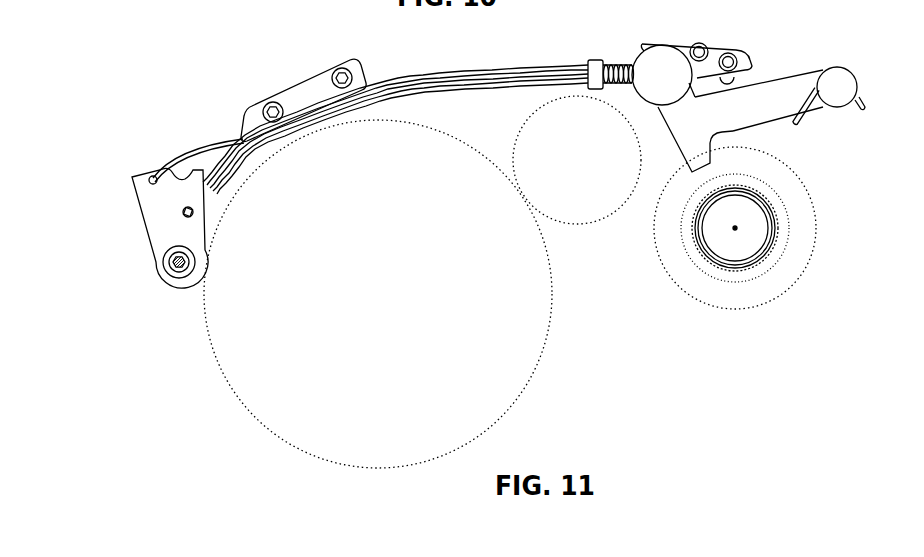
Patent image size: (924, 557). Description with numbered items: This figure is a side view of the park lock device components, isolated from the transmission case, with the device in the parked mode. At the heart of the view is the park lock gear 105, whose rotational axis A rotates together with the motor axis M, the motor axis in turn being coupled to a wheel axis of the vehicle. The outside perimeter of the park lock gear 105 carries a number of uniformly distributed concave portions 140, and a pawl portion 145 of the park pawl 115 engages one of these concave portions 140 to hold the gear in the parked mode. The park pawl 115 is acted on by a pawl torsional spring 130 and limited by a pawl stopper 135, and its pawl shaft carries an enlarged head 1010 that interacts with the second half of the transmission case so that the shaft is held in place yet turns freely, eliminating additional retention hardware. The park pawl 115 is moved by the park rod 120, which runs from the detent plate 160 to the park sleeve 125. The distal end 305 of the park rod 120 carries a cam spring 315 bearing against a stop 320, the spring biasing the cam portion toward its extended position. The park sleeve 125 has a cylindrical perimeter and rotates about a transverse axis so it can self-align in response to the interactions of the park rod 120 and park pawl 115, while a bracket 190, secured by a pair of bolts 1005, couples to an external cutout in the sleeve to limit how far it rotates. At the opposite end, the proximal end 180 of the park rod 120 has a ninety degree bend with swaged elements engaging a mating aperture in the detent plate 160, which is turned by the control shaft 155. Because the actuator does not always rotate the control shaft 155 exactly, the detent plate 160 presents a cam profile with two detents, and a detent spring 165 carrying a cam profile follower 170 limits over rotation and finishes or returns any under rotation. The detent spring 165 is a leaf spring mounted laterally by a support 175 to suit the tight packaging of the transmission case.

The park lock gear 105 is at (785, 267).
The park pawl 115 is at (753, 110).
The park rod 120 is at (450, 97).
The park sleeve 125 is at (662, 75).
The pawl torsional spring 130 is at (810, 103).
The pawl stopper 135 is at (733, 82).
The concave portions 140 is at (718, 158).
The pawl portion 145 is at (692, 163).
The control shaft 155 is at (184, 264).
The detent plate 160 is at (150, 217).
The detent spring 165 is at (192, 150).
The cam profile follower 170 is at (151, 177).
The support 175 is at (300, 93).
The proximal end 180 is at (191, 214).
The bracket 190 is at (682, 50).
The distal end 305 is at (696, 78).
The cam spring 315 is at (620, 70).
The stop 320 is at (597, 88).
The bolts 1005 is at (730, 60).
The enlarged head 1010 is at (837, 87).
The rotational axis A is at (735, 228).
The motor axis M is at (740, 255).